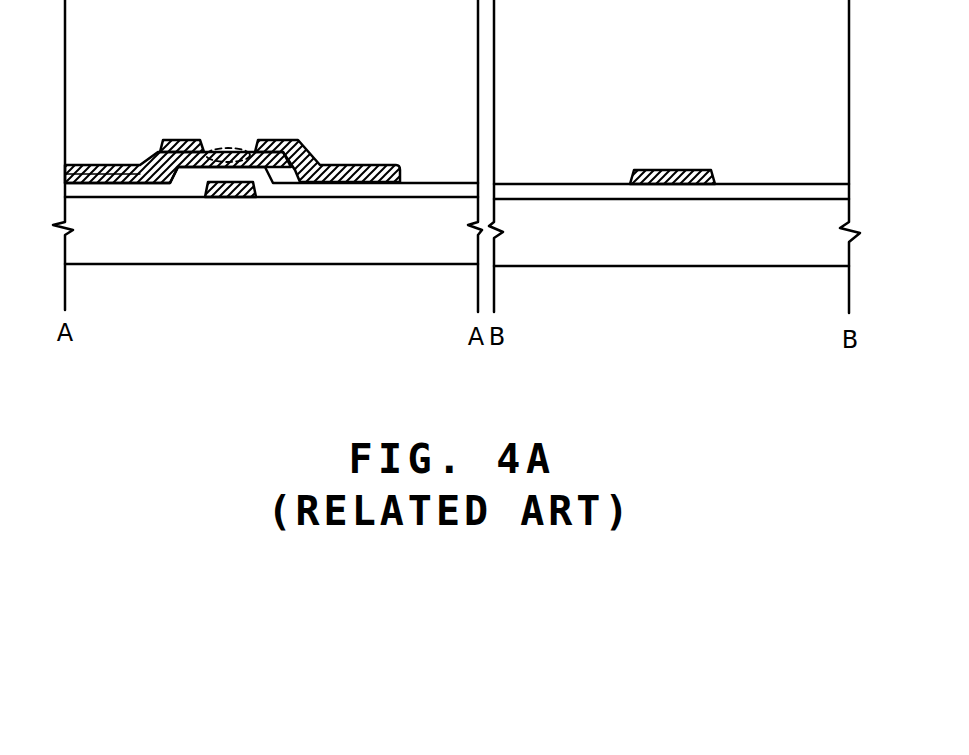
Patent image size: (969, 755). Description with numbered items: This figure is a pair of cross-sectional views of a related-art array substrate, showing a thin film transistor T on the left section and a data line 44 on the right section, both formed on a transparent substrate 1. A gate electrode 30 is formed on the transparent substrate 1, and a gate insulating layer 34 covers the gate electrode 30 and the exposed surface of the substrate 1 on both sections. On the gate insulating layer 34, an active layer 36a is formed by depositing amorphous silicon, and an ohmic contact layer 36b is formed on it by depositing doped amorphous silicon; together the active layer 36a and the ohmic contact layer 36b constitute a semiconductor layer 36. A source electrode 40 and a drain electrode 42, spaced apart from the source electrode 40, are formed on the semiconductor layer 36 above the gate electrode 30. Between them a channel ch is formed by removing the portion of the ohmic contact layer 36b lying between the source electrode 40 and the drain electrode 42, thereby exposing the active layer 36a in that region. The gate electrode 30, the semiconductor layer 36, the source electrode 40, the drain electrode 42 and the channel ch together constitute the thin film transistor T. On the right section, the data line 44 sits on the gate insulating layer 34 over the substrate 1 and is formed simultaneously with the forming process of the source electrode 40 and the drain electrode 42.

The transparent substrate 1 is at (288, 247).
The gate electrode 30 is at (240, 197).
The gate insulating layer 34 is at (341, 186).
The semiconductor layer 36 is at (172, 325).
The active layer 36a is at (163, 173).
The ohmic contact layer 36b is at (169, 166).
The source electrode 40 is at (184, 139).
The drain electrode 42 is at (268, 140).
The data line 44 is at (675, 170).
The channel ch is at (228, 148).
The thin film transistor T is at (65, 17).